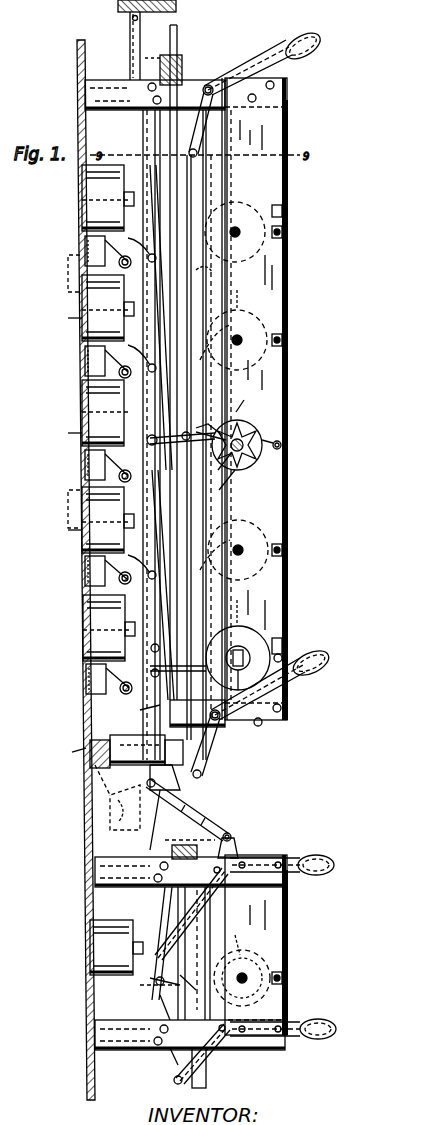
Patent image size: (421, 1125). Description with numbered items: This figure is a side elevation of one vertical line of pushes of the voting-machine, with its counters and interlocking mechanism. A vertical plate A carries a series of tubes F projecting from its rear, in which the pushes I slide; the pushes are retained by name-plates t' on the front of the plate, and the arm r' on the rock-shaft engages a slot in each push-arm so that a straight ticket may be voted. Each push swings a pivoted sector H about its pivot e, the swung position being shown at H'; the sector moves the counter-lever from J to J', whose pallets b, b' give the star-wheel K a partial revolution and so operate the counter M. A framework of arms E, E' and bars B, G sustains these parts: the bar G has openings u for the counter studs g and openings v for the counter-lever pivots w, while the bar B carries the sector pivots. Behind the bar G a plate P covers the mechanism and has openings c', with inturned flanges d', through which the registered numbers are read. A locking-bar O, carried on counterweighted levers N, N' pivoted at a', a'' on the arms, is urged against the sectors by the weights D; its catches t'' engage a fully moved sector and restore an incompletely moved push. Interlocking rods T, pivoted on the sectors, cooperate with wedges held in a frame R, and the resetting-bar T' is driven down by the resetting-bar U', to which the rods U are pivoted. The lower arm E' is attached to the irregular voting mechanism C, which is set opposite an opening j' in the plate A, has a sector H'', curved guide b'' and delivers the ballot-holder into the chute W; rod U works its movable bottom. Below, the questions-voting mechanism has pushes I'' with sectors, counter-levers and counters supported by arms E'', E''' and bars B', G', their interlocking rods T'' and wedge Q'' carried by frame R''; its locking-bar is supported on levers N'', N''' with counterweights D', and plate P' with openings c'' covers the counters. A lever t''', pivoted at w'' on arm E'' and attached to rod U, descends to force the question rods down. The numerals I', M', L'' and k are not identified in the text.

The vertical plate A is at (75, 570).
The resetting-bar U' is at (161, 11).
The rod U is at (142, 403).
The frame R is at (160, 61).
The resetting-bar T' is at (184, 351).
The arm E is at (155, 95).
The upright bar G is at (256, 402).
The bar G' is at (250, 801).
The flanges d' is at (288, 204).
The openings u is at (236, 391).
The openings v is at (276, 391).
The plate P is at (297, 410).
The plate P' is at (299, 952).
The weight D is at (307, 366).
The counterweight D' is at (293, 930).
The counterweighted lever N is at (240, 98).
The counterweighted lever N' is at (248, 718).
The lever N'' is at (192, 913).
The lever N''' is at (208, 1054).
The pivot a' is at (203, 76).
The pivot a'' is at (212, 702).
The vertical bar B is at (161, 435).
The bar B' is at (149, 1007).
The catch t'' is at (203, 419).
The name-plate t' is at (65, 391).
The pivoted lever t''' is at (188, 810).
The interlocking rod T is at (161, 417).
The interlocking rod T'' is at (158, 953).
The tube F is at (108, 413).
The push I is at (69, 424).
The box I' is at (106, 413).
The push I'' is at (100, 952).
The arm r' is at (108, 465).
The pivot e is at (153, 408).
The locking-bar O is at (158, 1065).
The counter M is at (251, 455).
The lower wheel axis M' is at (241, 943).
The sector H is at (181, 459).
The sector H' is at (139, 707).
The sector H'' is at (149, 986).
The star-wheel K is at (237, 460).
The pallet b is at (230, 475).
The pallet b' is at (243, 396).
The curved guide b'' is at (170, 759).
The stud g is at (222, 485).
The counter-lever J is at (178, 654).
The counter-lever J' is at (203, 698).
The pivot w is at (272, 532).
The pivot w'' is at (242, 830).
The opening c' is at (290, 428).
The opening c'' is at (292, 978).
The drum L'' is at (238, 658).
The lower arm E' is at (197, 704).
The arm E'' is at (190, 861).
The arm E''' is at (190, 1048).
The irregular voting mechanism C is at (122, 740).
The opening j' is at (69, 747).
The cam k is at (116, 797).
The frame R'' is at (229, 833).
The interlocking wedge Q'' is at (182, 824).
The chute W is at (210, 1073).